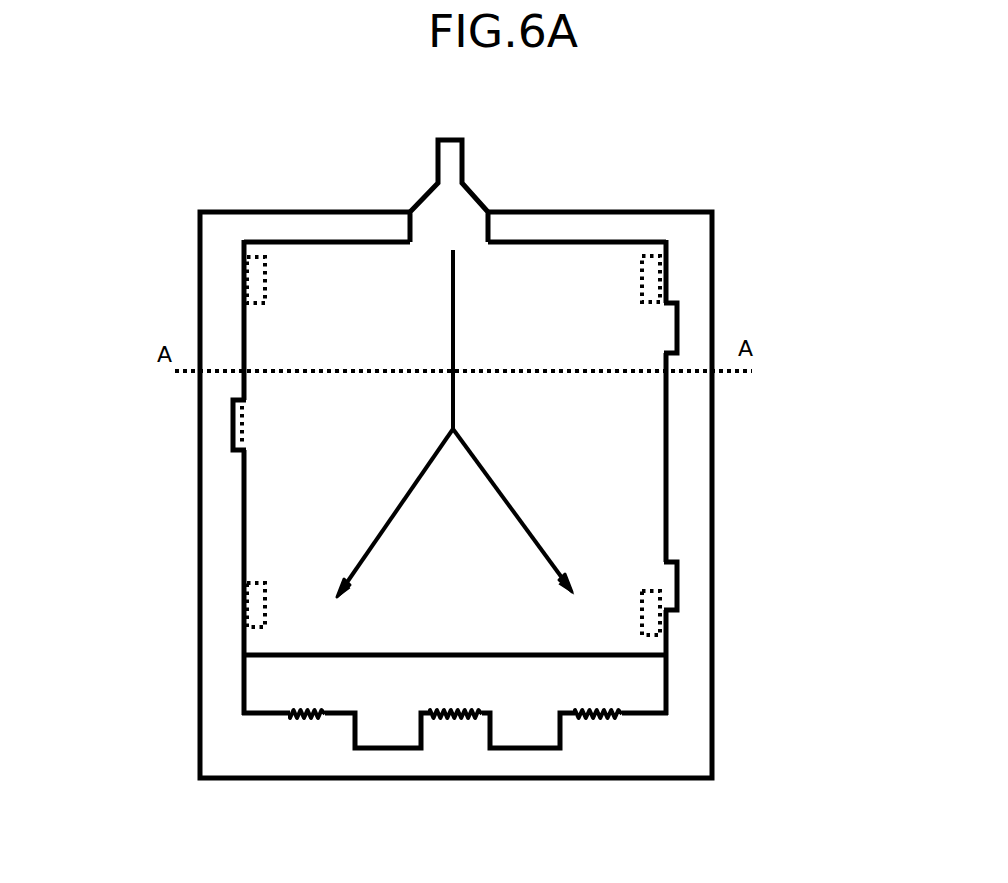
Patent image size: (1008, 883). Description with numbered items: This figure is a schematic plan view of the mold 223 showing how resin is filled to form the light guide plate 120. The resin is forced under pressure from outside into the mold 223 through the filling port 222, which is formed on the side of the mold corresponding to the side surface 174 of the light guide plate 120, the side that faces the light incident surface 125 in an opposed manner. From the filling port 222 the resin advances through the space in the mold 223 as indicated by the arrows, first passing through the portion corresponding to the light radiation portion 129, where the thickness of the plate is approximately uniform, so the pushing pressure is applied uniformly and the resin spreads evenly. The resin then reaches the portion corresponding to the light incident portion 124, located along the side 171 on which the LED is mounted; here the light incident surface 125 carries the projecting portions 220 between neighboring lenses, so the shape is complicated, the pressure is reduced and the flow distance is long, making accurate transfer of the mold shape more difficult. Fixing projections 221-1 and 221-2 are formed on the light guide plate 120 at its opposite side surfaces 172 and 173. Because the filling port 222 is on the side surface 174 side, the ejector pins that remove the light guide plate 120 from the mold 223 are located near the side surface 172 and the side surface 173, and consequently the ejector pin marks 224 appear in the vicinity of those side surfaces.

The light guide plate 120 is at (270, 508).
The light incident portion 124 is at (628, 684).
The light incident surface 125 is at (325, 715).
The light radiation portion 129 is at (618, 476).
The side 171 is at (270, 715).
The side surface 172 is at (668, 418).
The side surface 173 is at (243, 566).
The side surface 174 is at (304, 242).
The projecting portion 220 is at (527, 727).
The fixing projection 221-1 is at (672, 575).
The fixing projection 221-2 is at (233, 413).
The filling port 222 is at (448, 216).
The mold 223 is at (681, 240).
The ejector pin mark 224 is at (650, 283).